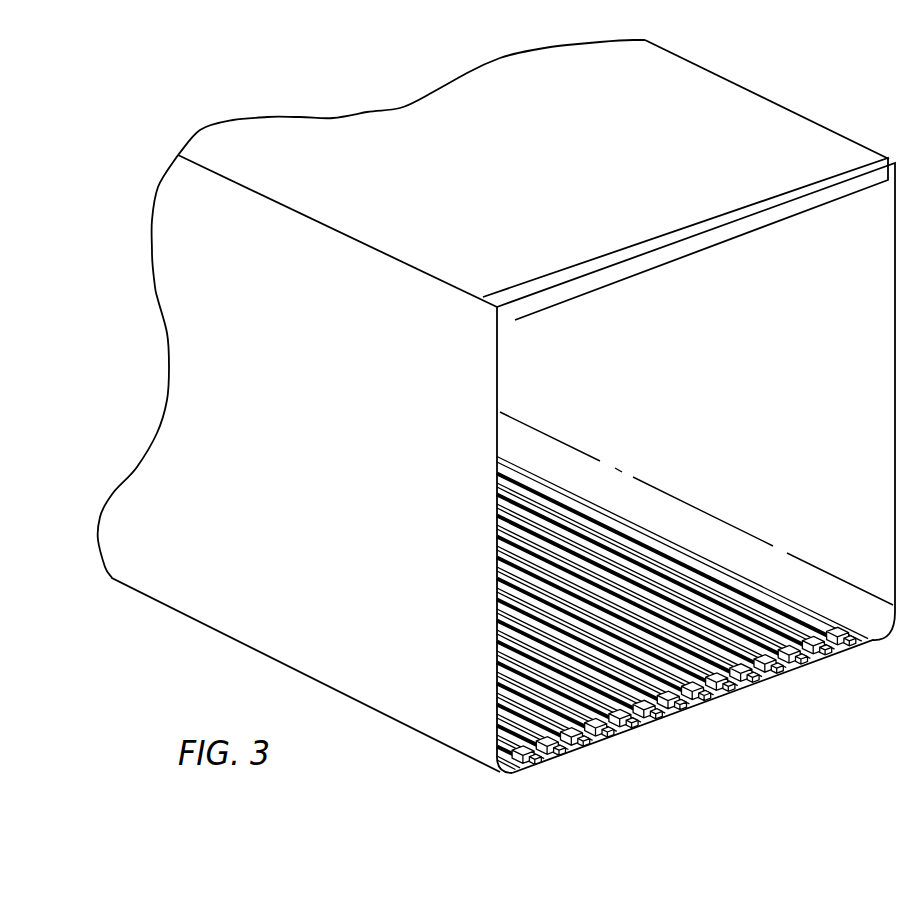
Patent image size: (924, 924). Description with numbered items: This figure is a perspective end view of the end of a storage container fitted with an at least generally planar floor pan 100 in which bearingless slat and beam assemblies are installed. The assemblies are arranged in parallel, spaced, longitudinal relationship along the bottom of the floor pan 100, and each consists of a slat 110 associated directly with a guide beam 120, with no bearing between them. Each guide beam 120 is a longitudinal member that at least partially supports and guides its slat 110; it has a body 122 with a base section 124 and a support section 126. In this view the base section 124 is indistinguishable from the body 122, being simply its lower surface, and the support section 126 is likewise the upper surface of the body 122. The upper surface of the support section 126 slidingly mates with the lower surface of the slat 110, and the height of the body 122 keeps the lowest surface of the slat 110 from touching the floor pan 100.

The floor pan 100 is at (853, 645).
The slat 110 is at (846, 623).
The guide beam 120 is at (830, 652).
The body 122 is at (692, 705).
The base section 124 is at (740, 693).
The support section 126 is at (728, 699).